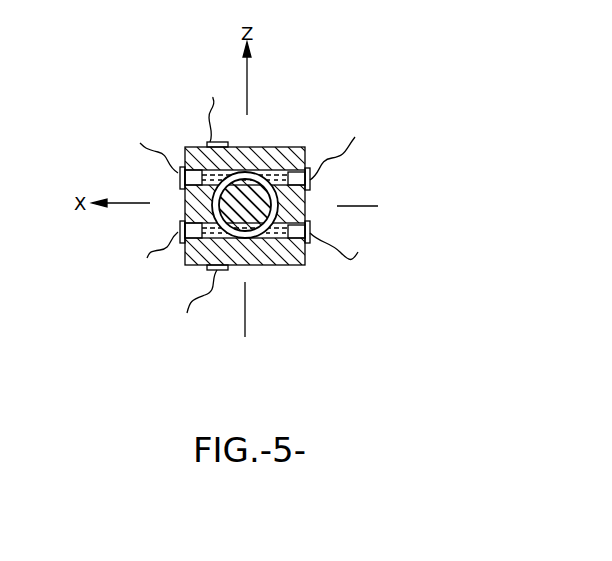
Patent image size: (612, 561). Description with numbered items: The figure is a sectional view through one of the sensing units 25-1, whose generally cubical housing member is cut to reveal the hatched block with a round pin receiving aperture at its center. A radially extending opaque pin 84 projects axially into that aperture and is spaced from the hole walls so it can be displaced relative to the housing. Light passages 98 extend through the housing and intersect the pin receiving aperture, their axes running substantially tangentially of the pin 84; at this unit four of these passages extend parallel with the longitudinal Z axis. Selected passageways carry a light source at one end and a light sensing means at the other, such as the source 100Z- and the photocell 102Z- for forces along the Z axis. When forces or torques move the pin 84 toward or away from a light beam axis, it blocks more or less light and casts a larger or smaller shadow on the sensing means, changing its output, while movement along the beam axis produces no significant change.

The sensing unit 25-1 is at (243, 224).
The opaque pin 84 is at (265, 240).
The light passage 98 is at (288, 172).
The light sensing means 102Z- is at (179, 179).
The light source 100Z- is at (310, 183).